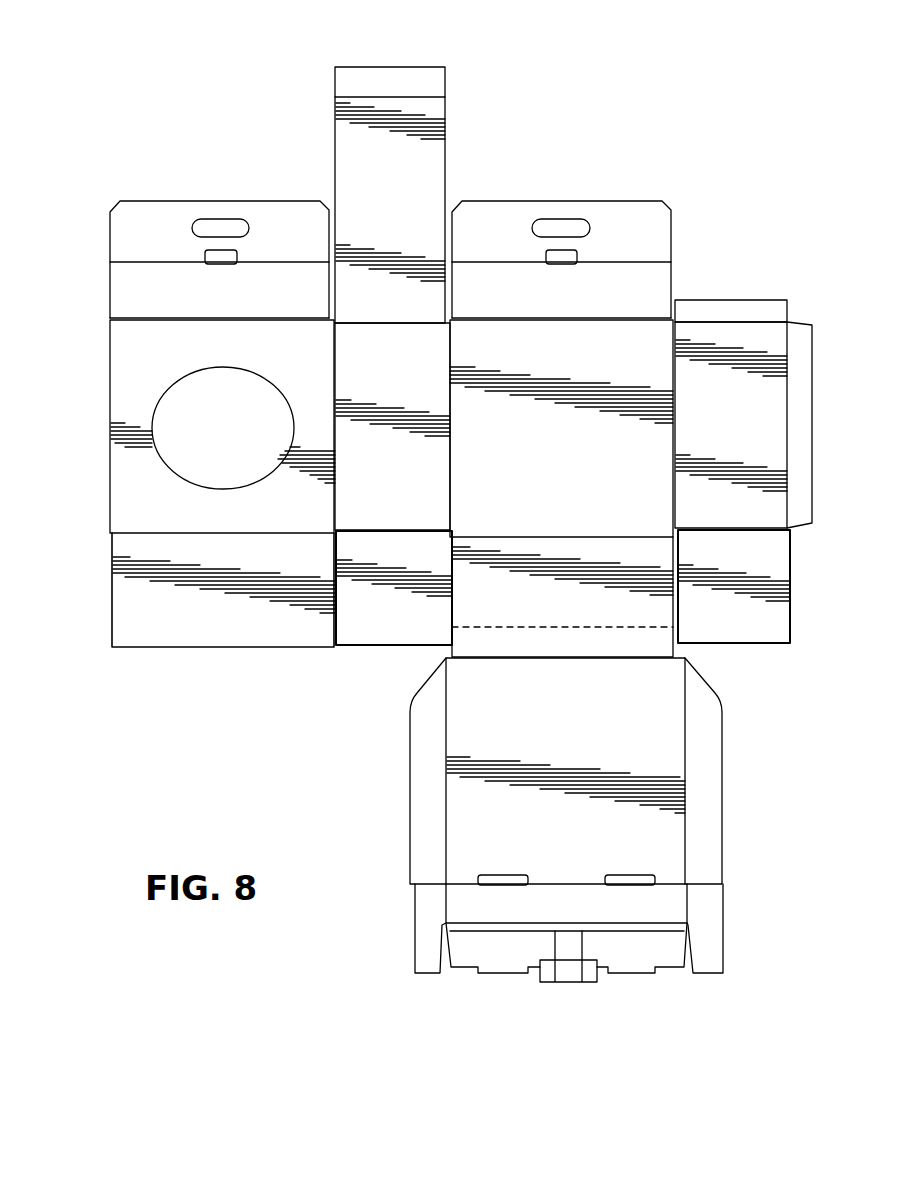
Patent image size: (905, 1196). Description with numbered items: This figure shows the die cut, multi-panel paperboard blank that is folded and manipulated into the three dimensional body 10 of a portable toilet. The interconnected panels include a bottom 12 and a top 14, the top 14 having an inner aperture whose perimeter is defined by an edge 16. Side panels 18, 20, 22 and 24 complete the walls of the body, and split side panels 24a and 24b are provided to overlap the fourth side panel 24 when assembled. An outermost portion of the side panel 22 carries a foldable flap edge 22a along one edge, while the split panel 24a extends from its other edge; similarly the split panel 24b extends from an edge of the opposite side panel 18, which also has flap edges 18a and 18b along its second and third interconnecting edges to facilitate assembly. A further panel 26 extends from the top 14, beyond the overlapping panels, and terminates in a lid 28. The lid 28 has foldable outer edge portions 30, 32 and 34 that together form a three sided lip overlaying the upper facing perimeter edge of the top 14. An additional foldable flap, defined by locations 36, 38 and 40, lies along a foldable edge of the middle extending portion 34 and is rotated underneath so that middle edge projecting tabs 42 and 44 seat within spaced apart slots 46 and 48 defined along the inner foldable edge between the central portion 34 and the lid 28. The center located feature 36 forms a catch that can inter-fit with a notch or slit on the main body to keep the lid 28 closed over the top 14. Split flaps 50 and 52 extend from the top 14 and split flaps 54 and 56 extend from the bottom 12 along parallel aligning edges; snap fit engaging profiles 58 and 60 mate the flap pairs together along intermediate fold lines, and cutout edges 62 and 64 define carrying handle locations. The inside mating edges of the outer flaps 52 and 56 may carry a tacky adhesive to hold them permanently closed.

The body 10 is at (120, 156).
The bottom 12 is at (561, 483).
The top 14 is at (137, 364).
The inner aperture perimeter defining edge 16 is at (179, 387).
The side panel 18 is at (722, 439).
The flap edge 18a is at (750, 301).
The flap edge 18b is at (815, 377).
The side panel 20 is at (375, 376).
The side panel 22 is at (375, 204).
The foldable flap edge 22a is at (402, 66).
The side panel 24 is at (226, 563).
The split side panel 24a is at (378, 563).
The split side panel 24b is at (719, 563).
The panel 26 is at (562, 563).
The lid 28 is at (567, 723).
The foldable outer edge portion 30 is at (418, 734).
The foldable outer edge portion 32 is at (716, 750).
The middle extending portion 34 is at (454, 896).
The center located feature 36 is at (568, 980).
The foldable flap location 38 is at (434, 968).
The foldable flap location 40 is at (709, 963).
The middle edge projecting tab 42 is at (494, 975).
The middle edge projecting tab 44 is at (627, 976).
The slot 46 is at (497, 875).
The slot 48 is at (620, 875).
The split flap 50 is at (125, 294).
The split flap 52 is at (125, 238).
The split flap 54 is at (665, 287).
The split flap 56 is at (665, 232).
The snap fit engaging profile 58 is at (219, 300).
The snap fit engaging profile 60 is at (561, 299).
The cutout edge 62 is at (205, 218).
The cutout edge 64 is at (555, 218).